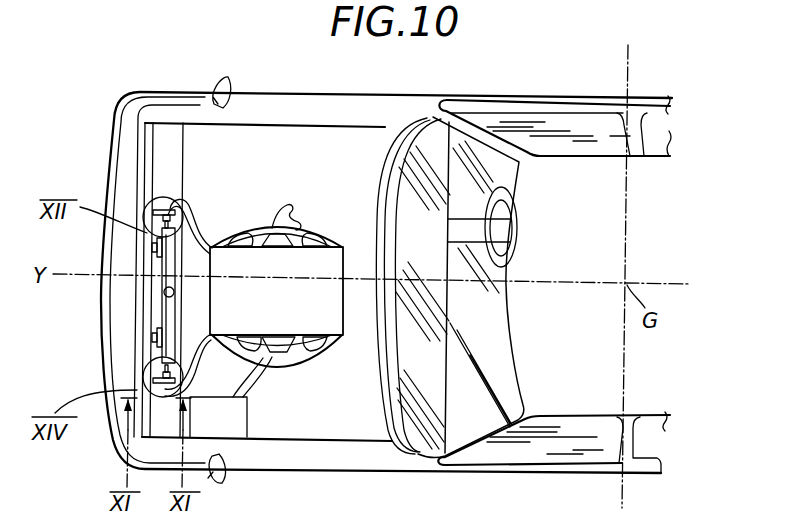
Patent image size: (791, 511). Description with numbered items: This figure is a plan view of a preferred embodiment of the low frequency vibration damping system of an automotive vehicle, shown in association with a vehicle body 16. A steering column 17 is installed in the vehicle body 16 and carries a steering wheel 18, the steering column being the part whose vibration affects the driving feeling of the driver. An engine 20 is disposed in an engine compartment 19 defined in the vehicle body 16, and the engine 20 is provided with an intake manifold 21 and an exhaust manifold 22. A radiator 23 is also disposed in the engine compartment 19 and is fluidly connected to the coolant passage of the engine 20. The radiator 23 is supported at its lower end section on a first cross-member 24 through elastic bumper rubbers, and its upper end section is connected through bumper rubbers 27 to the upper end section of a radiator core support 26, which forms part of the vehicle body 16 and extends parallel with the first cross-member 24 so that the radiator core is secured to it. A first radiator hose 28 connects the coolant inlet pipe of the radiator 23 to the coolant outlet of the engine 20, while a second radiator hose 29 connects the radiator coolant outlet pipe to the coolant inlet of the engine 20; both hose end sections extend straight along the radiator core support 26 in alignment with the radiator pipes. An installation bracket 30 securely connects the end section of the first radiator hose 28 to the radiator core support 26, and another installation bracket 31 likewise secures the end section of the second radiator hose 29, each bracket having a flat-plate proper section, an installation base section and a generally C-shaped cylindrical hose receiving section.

The vehicle body 16 is at (573, 97).
The steering column 17 is at (460, 232).
The steering wheel 18 is at (513, 184).
The engine compartment 19 is at (270, 133).
The engine 20 is at (325, 258).
The intake manifold 21 is at (313, 363).
The exhaust manifold 22 is at (276, 214).
The radiator 23 is at (167, 312).
The first cross-member 24 is at (170, 169).
The radiator core support 26 is at (148, 155).
The bumper rubbers 27 is at (152, 245).
The first radiator hose 28 is at (200, 233).
The second radiator hose 29 is at (198, 357).
The installation bracket 30 is at (160, 207).
The installation bracket 31 is at (157, 367).